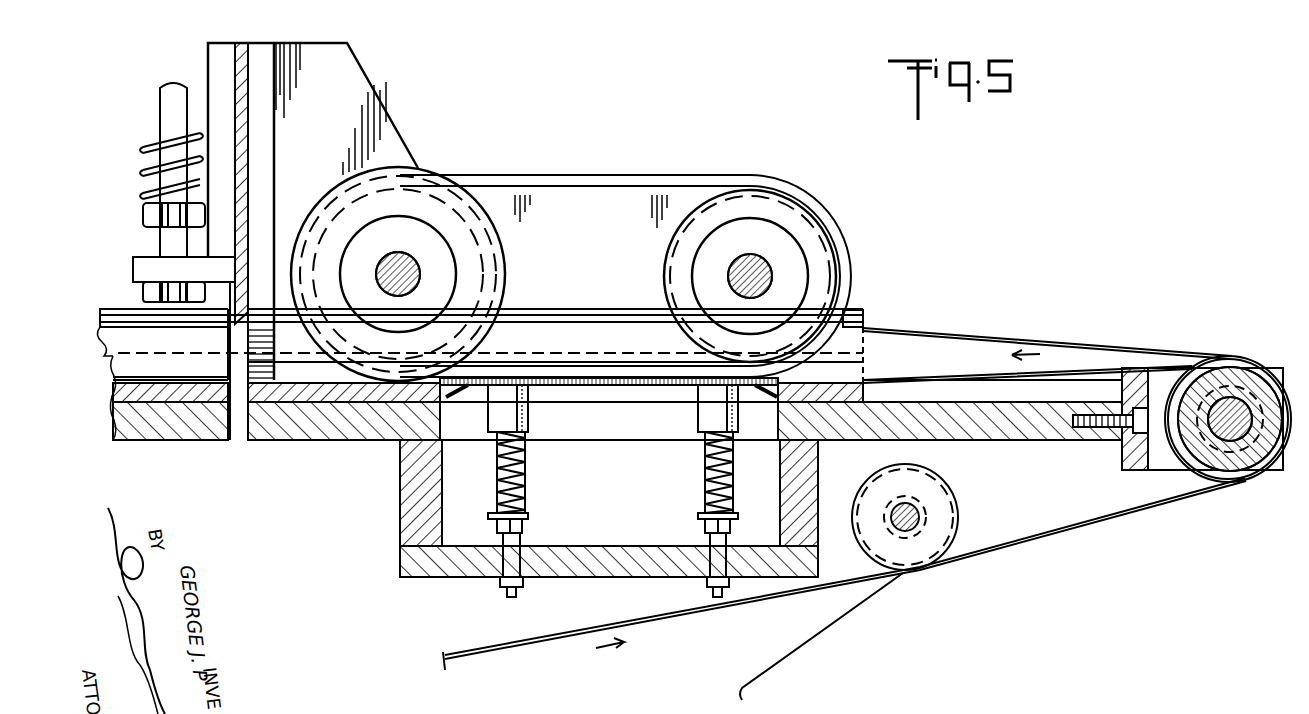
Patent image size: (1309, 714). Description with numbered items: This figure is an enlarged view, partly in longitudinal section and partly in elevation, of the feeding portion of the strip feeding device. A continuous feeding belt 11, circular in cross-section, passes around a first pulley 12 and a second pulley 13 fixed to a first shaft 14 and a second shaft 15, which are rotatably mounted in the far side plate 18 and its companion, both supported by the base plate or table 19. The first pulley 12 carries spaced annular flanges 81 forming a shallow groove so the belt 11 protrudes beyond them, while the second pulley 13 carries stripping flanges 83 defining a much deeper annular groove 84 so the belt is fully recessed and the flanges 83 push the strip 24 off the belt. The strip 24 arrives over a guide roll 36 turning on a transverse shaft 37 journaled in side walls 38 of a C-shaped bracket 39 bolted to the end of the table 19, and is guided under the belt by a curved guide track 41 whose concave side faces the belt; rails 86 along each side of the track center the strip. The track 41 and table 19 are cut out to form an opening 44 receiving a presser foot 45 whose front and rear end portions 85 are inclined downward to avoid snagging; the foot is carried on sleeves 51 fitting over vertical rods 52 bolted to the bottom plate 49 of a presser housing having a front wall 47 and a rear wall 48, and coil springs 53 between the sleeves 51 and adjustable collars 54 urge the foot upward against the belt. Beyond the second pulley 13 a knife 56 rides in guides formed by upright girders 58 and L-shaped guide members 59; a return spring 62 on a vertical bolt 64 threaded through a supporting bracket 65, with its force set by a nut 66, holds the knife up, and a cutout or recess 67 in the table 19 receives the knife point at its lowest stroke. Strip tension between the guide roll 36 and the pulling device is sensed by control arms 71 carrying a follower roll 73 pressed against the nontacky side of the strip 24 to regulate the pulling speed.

The feeding belt 11 is at (650, 182).
The first pulley 12 is at (765, 226).
The second pulley 13 is at (410, 212).
The first shaft 14 is at (762, 270).
The second shaft 15 is at (384, 270).
The far side plate 18 is at (545, 206).
The base plate or table 19 is at (300, 432).
The strip 24 is at (950, 376).
The guide roll 36 is at (1244, 472).
The transverse shaft 37 is at (1232, 408).
The side walls 38 is at (1166, 456).
The C-shaped bracket 39 is at (1128, 450).
The guide track 41 is at (128, 352).
The opening 44 is at (440, 426).
The presser foot 45 is at (604, 380).
The front wall 47 is at (410, 512).
The rear wall 48 is at (818, 518).
The bottom plate 49 is at (628, 564).
The sleeves 51 is at (520, 420).
The vertical rods 52 is at (515, 564).
The coil springs 53 is at (524, 464).
The adjustable collars 54 is at (525, 525).
The knife 56 is at (240, 102).
The upright girders 58 is at (258, 190).
The L-shaped guide members 59 is at (208, 84).
The return spring 62 is at (158, 160).
The vertical bolt 64 is at (165, 118).
The supporting bracket 65 is at (140, 268).
The nut 66 is at (143, 214).
The cutout or recess 67 is at (232, 438).
The control arms 71 is at (786, 648).
The follower roll 73 is at (942, 510).
The annular flanges 81 is at (668, 252).
The stripping flanges 83 is at (506, 280).
The annular groove 84 is at (482, 250).
The front and rear end portions 85 is at (436, 398).
The rails 86 is at (120, 312).